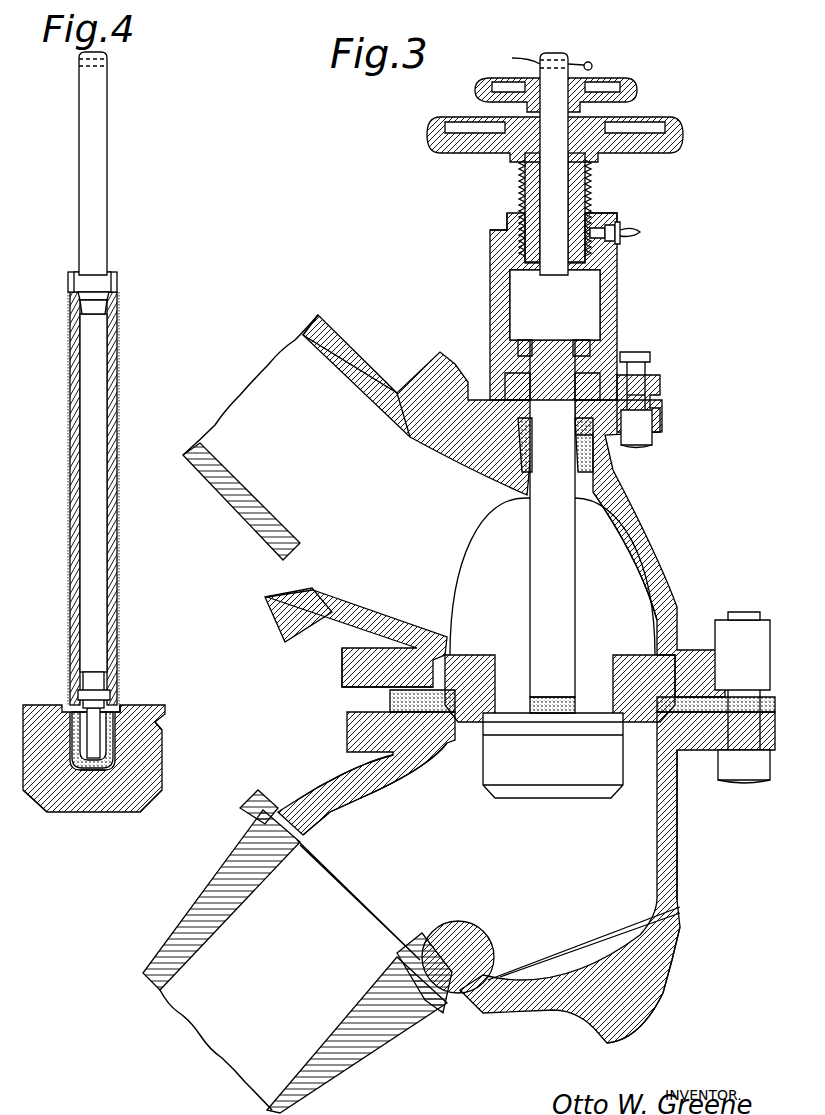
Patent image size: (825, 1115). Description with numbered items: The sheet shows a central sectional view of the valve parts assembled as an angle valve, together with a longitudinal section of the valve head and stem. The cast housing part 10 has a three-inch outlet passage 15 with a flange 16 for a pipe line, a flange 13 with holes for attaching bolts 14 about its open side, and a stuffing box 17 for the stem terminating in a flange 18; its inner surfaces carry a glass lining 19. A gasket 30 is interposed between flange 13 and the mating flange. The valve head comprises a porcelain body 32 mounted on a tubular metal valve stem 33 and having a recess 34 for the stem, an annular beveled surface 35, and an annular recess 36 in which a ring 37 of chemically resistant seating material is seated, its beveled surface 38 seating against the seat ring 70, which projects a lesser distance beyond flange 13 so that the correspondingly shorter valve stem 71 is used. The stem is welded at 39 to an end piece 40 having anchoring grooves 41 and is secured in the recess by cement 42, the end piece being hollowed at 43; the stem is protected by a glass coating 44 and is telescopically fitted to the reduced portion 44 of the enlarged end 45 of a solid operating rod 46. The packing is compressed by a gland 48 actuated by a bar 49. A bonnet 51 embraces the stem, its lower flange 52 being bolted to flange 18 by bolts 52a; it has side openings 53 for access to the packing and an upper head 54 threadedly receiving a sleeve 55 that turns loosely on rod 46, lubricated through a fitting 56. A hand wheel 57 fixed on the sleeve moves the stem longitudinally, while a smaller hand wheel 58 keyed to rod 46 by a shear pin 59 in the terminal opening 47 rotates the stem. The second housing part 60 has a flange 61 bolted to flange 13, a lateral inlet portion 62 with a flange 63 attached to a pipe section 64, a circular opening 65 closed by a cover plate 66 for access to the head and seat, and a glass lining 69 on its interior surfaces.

In FIG. 3, the housing part 10 is at (636, 540).
In FIG. 3, the flange 13 is at (342, 660).
In FIG. 3, the bolts 14 is at (748, 712).
In FIG. 3, the outlet passage 15 is at (357, 606).
In FIG. 3, the flange 16 is at (270, 612).
In FIG. 3, the stuffing box 17 is at (600, 460).
In FIG. 3, the flange 18 is at (660, 428).
In FIG. 3, the corrosion-resisting lining 19 is at (628, 535).
In FIG. 3, the gasket 30 is at (662, 726).
In FIG. 4, the valve head body 32 is at (163, 762).
In FIG. 3, the valve head body 32 is at (555, 755).
In FIG. 4, the valve stem 33 is at (100, 518).
In FIG. 3, the valve stem 33 is at (580, 606).
In FIG. 4, the recess 34 is at (120, 790).
In FIG. 4, the beveled surface 35 is at (160, 738).
In FIG. 4, the annular recess 36 is at (135, 712).
In FIG. 4, the seating ring 37 is at (150, 712).
In FIG. 4, the beveled surface 38 is at (160, 718).
In FIG. 3, the beveled surface 38 is at (512, 720).
In FIG. 4, the weld 39 is at (76, 678).
In FIG. 4, the end piece 40 is at (78, 695).
In FIG. 4, the anchoring grooves 41 is at (45, 800).
In FIG. 4, the cement 42 is at (82, 780).
In FIG. 4, the hollow 43 is at (98, 770).
In FIG. 4, the glass coating 44 is at (98, 314).
In FIG. 4, the enlarged end 45 is at (110, 280).
In FIG. 4, the operating rod 46 is at (107, 225).
In FIG. 3, the operating rod 46 is at (545, 195).
In FIG. 4, the terminal opening 47 is at (105, 72).
In FIG. 3, the terminal opening 47 is at (558, 58).
In FIG. 3, the gland 48 is at (505, 368).
In FIG. 3, the bar 49 is at (592, 346).
In FIG. 3, the valve bonnet 51 is at (492, 326).
In FIG. 3, the lower flange 52 is at (652, 385).
In FIG. 3, the bolts 52a is at (646, 405).
In FIG. 3, the side openings 53 is at (600, 300).
In FIG. 3, the upper head 54 is at (590, 225).
In FIG. 3, the sleeve 55 is at (586, 196).
In FIG. 3, the fitting 56 is at (642, 232).
In FIG. 3, the hand wheel 57 is at (683, 135).
In FIG. 3, the hand wheel 58 is at (637, 89).
In FIG. 3, the shear pin 59 is at (592, 62).
In FIG. 3, the housing part 60 is at (683, 846).
In FIG. 3, the flange 61 is at (347, 720).
In FIG. 3, the lateral inlet portion 62 is at (350, 786).
In FIG. 3, the flange 63 is at (270, 802).
In FIG. 3, the pipe section 64 is at (240, 888).
In FIG. 3, the circular opening 65 is at (612, 930).
In FIG. 3, the cover plate 66 is at (680, 928).
In FIG. 3, the glass lining 69 is at (366, 798).
In FIG. 3, the valve seat ring 70 is at (470, 656).
In FIG. 4, the valve stem 71 is at (100, 452).
In FIG. 3, the valve stem 71 is at (530, 566).